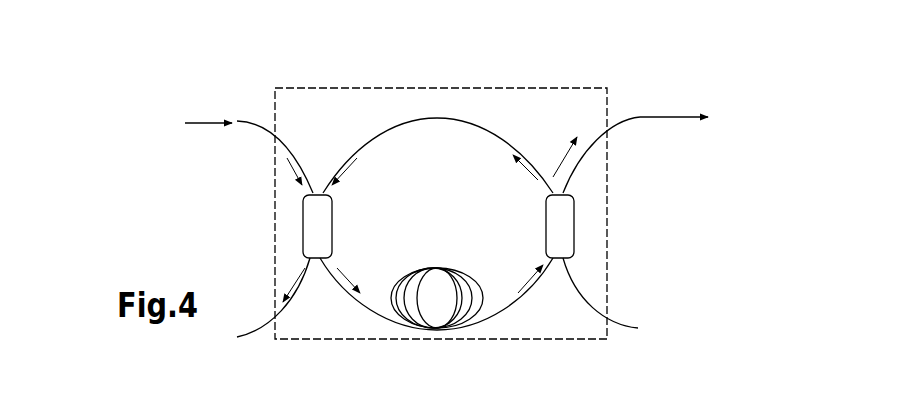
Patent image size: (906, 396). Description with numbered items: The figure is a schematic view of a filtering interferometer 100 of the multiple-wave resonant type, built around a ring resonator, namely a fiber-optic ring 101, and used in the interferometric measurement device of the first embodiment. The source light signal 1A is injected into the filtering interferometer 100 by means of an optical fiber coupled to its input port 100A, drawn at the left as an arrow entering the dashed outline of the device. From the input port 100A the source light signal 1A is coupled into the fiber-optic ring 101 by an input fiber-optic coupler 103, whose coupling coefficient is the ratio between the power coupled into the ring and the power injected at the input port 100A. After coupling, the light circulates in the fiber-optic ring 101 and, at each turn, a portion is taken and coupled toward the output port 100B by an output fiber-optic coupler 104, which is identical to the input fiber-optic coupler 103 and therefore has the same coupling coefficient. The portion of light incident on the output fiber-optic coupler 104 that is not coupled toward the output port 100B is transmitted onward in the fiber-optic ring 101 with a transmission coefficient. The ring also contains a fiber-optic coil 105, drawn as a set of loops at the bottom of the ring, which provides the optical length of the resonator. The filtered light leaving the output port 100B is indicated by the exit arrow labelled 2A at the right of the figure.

The filtering interferometer 100 is at (553, 85).
The fiber-optic ring 101 is at (372, 133).
The input fiber-optic coupler 103 is at (303, 211).
The output fiber-optic coupler 104 is at (574, 213).
The fiber-optic coil 105 is at (468, 268).
The input port 100A is at (260, 127).
The output port 100B is at (638, 117).
The source light signal 1A is at (203, 122).
The output optical signal 2A is at (677, 117).